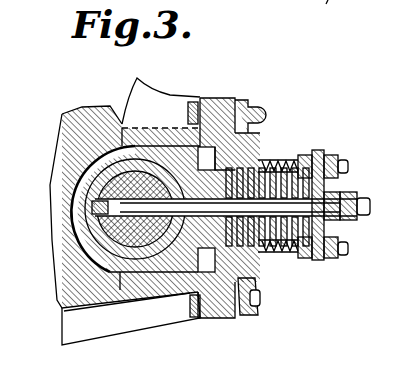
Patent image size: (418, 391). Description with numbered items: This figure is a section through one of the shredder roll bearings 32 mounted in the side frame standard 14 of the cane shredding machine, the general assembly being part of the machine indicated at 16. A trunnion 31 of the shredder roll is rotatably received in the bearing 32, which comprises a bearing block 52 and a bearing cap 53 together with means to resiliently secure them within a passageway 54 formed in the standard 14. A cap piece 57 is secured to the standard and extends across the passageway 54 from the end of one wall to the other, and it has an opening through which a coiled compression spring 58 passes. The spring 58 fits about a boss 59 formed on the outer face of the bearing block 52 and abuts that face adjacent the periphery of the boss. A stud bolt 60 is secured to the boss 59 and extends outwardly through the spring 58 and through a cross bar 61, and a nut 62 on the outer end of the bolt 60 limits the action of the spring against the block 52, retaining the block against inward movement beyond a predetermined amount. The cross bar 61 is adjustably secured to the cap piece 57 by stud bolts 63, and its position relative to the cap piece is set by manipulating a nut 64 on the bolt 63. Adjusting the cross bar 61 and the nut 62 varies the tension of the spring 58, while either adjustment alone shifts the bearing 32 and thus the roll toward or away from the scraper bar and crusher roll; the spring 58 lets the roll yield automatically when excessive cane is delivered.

The standard 14 is at (91, 124).
The unit 16 is at (328, 11).
The trunnion 31 is at (143, 200).
The bearing 32 is at (197, 92).
The bearing block 52 is at (216, 104).
The bearing cap 53 is at (100, 238).
The passageway 54 is at (257, 279).
The cap piece 57 is at (262, 158).
The coiled compression spring 58 is at (292, 165).
The boss 59 is at (252, 132).
The stud bolt 60 is at (363, 206).
The cross bar 61 is at (330, 156).
The nut 62 is at (343, 222).
The stud bolt 63 is at (346, 167).
The nut 64 is at (340, 159).